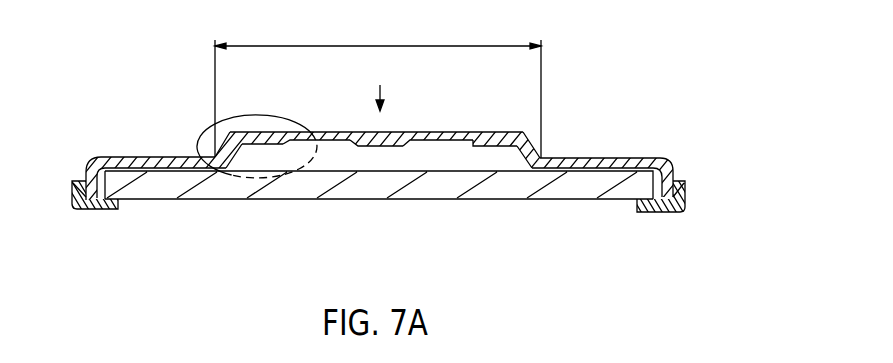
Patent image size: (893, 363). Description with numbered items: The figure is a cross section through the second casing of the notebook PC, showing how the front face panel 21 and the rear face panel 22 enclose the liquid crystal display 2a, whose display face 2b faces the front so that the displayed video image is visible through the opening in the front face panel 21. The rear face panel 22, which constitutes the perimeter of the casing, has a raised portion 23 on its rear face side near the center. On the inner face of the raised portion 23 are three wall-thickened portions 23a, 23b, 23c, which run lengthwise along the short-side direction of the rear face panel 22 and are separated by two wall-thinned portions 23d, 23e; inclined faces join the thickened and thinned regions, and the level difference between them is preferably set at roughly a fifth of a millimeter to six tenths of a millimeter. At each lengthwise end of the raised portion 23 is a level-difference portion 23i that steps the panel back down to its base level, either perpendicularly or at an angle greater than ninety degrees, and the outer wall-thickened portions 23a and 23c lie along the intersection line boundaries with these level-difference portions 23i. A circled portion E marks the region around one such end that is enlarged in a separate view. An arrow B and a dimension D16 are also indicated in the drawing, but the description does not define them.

The liquid crystal display 2a is at (358, 186).
The display face 2b is at (484, 210).
The front face panel 21 is at (681, 197).
The rear face panel 22 is at (671, 168).
The raised portion 23 is at (264, 132).
The wall-thickened portion 23a is at (282, 132).
The wall-thickened portion 23b is at (400, 132).
The wall-thickened portion 23c is at (485, 132).
The wall-thinned portion 23d is at (327, 132).
The wall-thinned portion 23e is at (441, 132).
The level-difference portion 23i is at (226, 141).
The direction B is at (380, 86).
The dimension D16 is at (378, 90).
The portion E is at (197, 146).